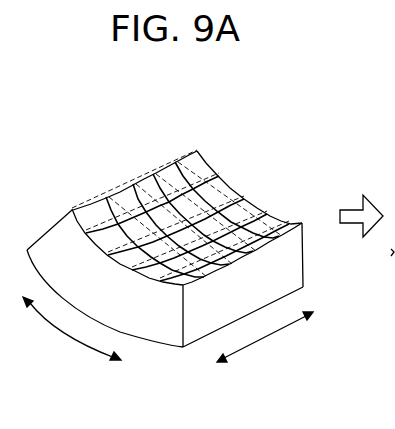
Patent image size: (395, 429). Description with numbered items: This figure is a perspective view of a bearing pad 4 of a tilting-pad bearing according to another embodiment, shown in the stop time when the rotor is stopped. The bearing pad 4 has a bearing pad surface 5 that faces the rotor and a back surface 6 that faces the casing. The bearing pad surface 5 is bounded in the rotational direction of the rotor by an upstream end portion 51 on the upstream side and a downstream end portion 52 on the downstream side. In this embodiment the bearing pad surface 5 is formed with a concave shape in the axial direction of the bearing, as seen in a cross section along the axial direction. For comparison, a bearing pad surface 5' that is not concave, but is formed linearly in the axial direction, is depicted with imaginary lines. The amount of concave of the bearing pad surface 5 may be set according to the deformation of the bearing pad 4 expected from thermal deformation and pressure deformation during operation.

The bearing pad 4 is at (239, 148).
The bearing pad surface 5 is at (187, 187).
The bearing pad surface not formed in a concave shape 5' is at (180, 186).
The upstream end portion 51 is at (100, 194).
The downstream end portion 52 is at (284, 246).
The back surface 6 is at (151, 345).